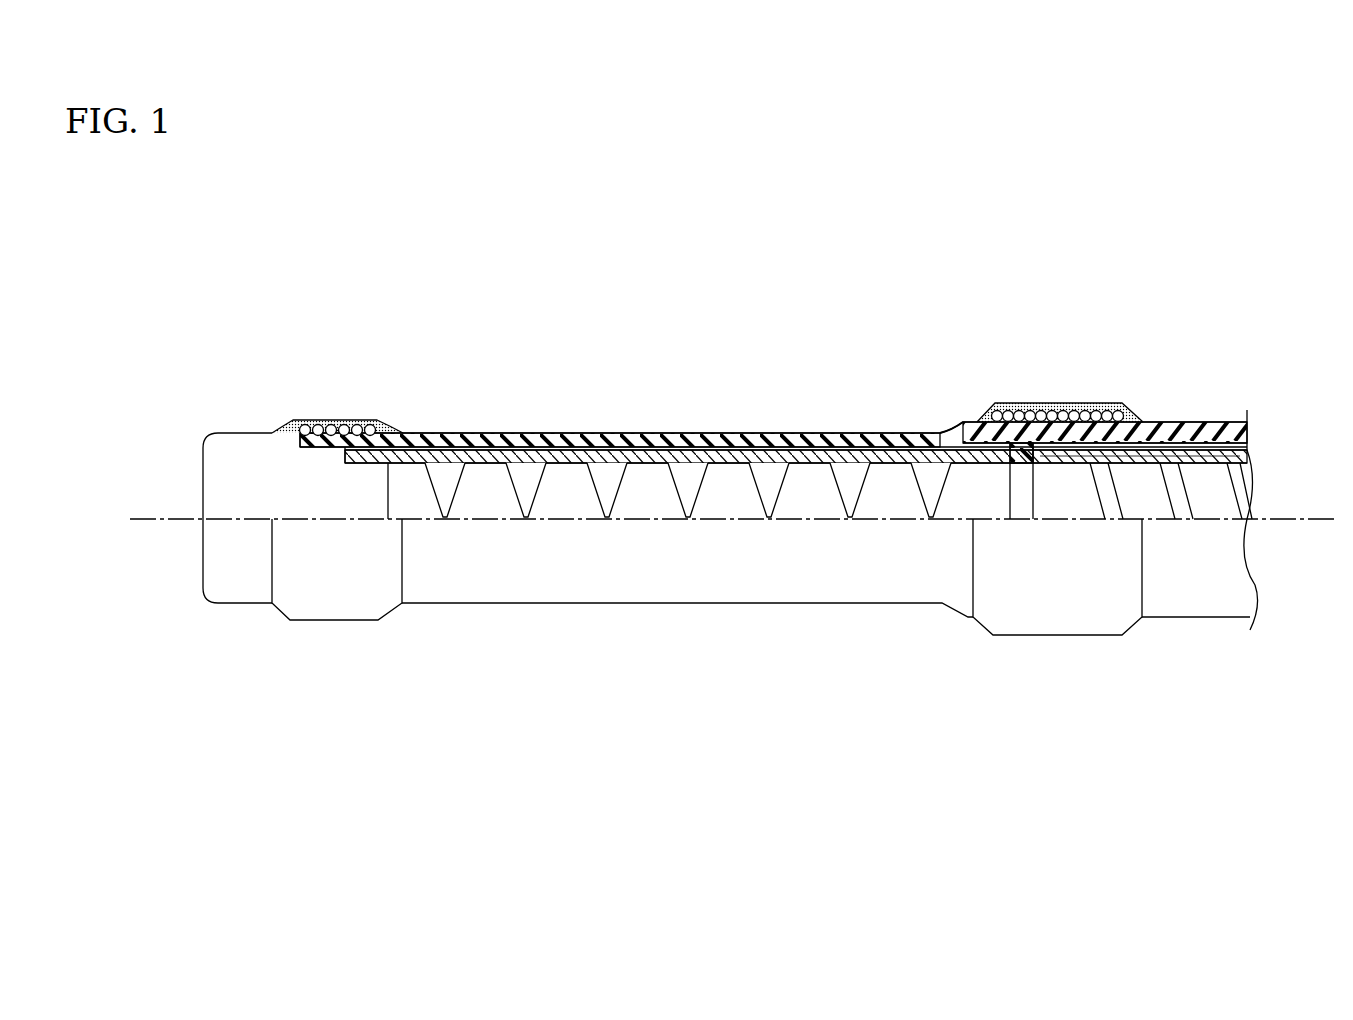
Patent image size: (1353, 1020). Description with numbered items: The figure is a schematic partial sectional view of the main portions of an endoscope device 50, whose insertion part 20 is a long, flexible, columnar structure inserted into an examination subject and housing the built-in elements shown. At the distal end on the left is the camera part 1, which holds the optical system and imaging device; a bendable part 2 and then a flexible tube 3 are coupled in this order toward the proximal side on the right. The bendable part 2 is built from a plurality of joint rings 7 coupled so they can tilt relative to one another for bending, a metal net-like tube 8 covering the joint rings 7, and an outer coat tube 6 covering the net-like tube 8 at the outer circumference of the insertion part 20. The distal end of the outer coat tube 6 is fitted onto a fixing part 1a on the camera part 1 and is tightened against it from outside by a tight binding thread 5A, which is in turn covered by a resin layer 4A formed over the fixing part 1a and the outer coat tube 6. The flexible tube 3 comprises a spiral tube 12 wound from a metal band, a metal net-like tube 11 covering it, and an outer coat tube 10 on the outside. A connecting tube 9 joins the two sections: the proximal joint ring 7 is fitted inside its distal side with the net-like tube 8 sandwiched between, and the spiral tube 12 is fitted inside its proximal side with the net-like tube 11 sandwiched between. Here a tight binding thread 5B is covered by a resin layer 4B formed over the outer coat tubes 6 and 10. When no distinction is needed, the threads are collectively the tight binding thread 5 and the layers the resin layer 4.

The endoscope device 50 is at (846, 260).
The insertion part 20 is at (730, 513).
The camera part 1 is at (258, 604).
The fixing part 1a is at (313, 433).
The bendable part 2 is at (582, 604).
The flexible tube 3 is at (1196, 618).
The resin layer 4 is at (705, 362).
The resin layer 4A is at (285, 423).
The resin layer 4B is at (1100, 415).
The tight binding thread 5 is at (712, 359).
The tight binding thread 5A is at (350, 423).
The tight binding thread 5B is at (1023, 417).
The outer coat tube 6 is at (492, 440).
The joint ring 7 is at (640, 458).
The metal net-like tube 8 is at (728, 448).
The connecting tube 9 is at (972, 427).
The outer coat tube 10 is at (1148, 427).
The metal net-like tube 11 is at (1187, 448).
The spiral tube 12 is at (1210, 455).